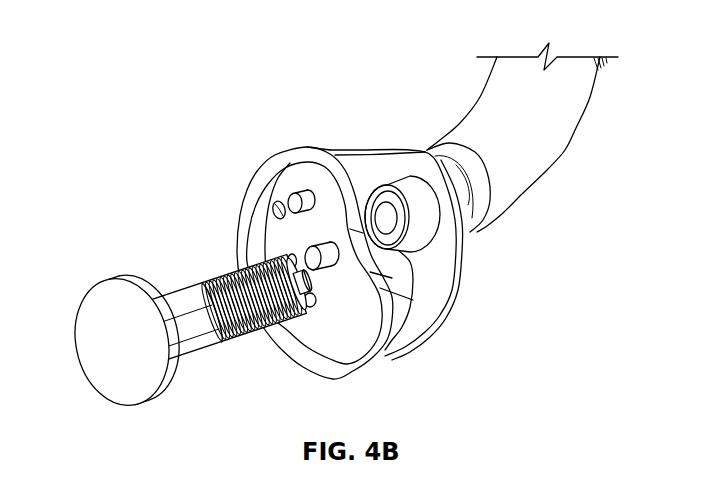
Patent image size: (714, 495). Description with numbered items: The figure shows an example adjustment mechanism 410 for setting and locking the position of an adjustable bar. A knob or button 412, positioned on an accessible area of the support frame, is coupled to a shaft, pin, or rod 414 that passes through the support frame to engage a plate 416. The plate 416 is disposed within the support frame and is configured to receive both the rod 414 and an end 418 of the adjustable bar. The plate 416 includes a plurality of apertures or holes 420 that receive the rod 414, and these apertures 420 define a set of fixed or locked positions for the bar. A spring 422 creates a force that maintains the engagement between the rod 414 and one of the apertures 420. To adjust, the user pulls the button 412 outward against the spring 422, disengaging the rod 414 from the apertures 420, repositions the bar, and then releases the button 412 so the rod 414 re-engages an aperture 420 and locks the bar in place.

The mechanism 410 is at (328, 114).
The knob or button 412 is at (76, 335).
The shaft, pin, or rod 414 is at (203, 312).
The plate 416 is at (391, 361).
The end of the adjustable bar 418 is at (456, 258).
The apertures or holes 420 is at (272, 206).
The spring 422 is at (247, 327).